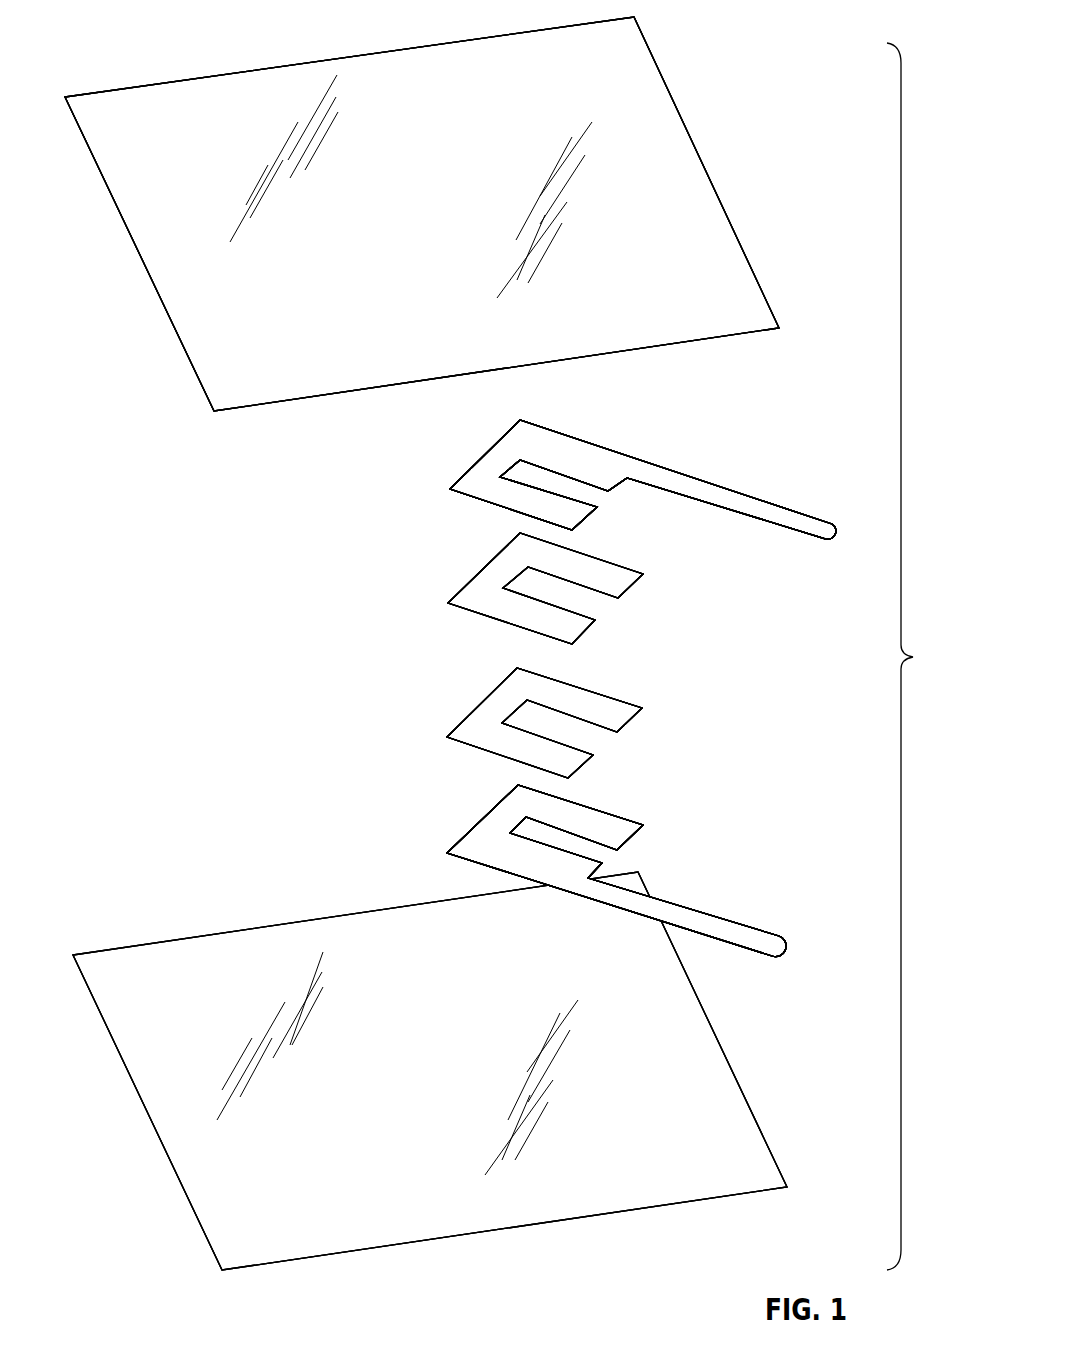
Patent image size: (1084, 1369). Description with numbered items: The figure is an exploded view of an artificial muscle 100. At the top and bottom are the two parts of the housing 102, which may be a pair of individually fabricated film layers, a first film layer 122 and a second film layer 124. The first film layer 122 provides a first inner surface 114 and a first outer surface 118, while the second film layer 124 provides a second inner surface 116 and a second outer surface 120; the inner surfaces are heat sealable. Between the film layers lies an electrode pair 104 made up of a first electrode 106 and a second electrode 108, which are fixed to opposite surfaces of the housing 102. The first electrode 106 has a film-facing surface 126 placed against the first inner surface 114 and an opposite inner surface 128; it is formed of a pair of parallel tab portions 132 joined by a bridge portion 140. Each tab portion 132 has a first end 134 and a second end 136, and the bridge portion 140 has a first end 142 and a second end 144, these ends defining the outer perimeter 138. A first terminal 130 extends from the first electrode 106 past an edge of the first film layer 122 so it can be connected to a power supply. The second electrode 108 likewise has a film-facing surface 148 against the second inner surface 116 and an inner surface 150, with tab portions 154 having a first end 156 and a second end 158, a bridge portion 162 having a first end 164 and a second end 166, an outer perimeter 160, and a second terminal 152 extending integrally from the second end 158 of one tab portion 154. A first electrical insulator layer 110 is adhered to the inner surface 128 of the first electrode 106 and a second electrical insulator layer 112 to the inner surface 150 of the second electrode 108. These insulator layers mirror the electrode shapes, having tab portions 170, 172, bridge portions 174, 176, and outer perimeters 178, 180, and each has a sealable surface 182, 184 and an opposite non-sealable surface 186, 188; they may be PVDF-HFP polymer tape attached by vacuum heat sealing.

The artificial muscle 100 is at (924, 656).
The housing 102 is at (712, 45).
The electrode pair 104 is at (841, 426).
The first electrode 106 is at (715, 841).
The second electrode 108 is at (781, 559).
The first electrical insulator layer 110 is at (355, 675).
The second electrical insulator layer 112 is at (421, 564).
The first inner surface 114 is at (155, 953).
The second inner surface 116 is at (278, 402).
The first outer surface 118 is at (585, 1218).
The second outer surface 120 is at (147, 240).
The first film layer 122 is at (237, 883).
The second film layer 124 is at (127, 47).
The film-facing surface 126 is at (465, 862).
The inner surface 128 is at (497, 818).
The first terminal 130 is at (750, 938).
The tab portions 132 is at (550, 867).
The first end 134 is at (445, 850).
The second end 136 is at (603, 871).
The outer perimeter 138 is at (505, 875).
The bridge portion 140 is at (510, 804).
The first end 142 is at (472, 822).
The second end 144 is at (570, 837).
The film-facing surface 148 is at (538, 437).
The inner surface 150 is at (458, 490).
The second terminal 152 is at (767, 510).
The tab portions 154 is at (643, 446).
The first end 156 is at (503, 432).
The second end 158 is at (626, 481).
The outer perimeter 160 is at (623, 453).
The bridge portion 162 is at (503, 464).
The first end 164 is at (450, 485).
The second end 166 is at (563, 480).
The tab portions 170 is at (615, 681).
The tab portions 172 is at (611, 623).
The bridge portion 174 is at (501, 696).
The bridge portion 176 is at (499, 565).
The outer perimeter 178 is at (638, 706).
The outer perimeter 180 is at (622, 564).
The sealable surface 182 is at (447, 736).
The sealable surface 184 is at (473, 597).
The non-sealable surface 186 is at (482, 718).
The non-sealable surface 188 is at (468, 607).